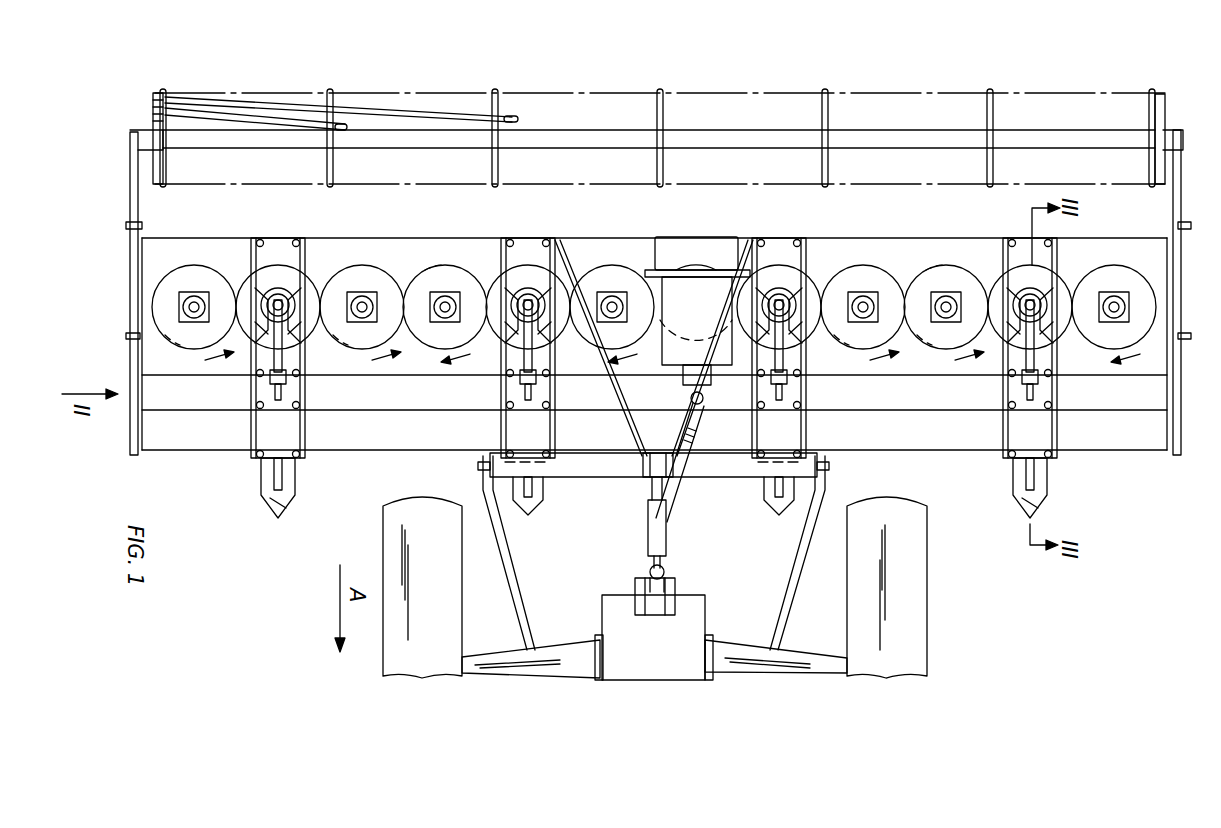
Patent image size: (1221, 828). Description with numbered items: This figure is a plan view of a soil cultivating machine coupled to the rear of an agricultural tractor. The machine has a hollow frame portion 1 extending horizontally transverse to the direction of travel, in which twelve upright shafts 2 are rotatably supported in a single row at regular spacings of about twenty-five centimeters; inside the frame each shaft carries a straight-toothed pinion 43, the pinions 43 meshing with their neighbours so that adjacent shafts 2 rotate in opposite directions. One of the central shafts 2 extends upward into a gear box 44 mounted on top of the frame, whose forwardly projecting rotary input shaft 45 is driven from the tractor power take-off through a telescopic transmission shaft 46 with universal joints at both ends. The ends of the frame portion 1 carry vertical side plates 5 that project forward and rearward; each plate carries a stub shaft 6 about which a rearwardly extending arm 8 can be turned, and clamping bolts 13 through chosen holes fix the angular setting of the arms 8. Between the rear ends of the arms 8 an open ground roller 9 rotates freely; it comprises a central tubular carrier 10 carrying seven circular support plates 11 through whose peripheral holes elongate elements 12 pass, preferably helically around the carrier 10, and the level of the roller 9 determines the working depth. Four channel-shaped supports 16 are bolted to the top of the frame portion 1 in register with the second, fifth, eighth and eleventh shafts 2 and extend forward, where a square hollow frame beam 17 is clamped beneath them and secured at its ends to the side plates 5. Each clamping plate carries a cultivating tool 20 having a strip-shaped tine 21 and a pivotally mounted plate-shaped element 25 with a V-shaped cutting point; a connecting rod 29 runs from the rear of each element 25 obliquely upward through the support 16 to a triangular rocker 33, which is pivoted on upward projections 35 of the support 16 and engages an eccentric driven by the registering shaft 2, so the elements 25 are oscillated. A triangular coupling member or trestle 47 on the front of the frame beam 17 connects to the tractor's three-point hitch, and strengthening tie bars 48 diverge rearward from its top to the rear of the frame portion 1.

The hollow frame portion 1 is at (1158, 232).
The shafts 2 is at (280, 258).
The side plates 5 is at (130, 430).
The stub shafts 6 is at (126, 336).
The arms 8 is at (130, 176).
The ground roller 9 is at (905, 92).
The tubular carrier 10 is at (872, 142).
The support plates 11 is at (165, 95).
The elongate elements 12 is at (285, 118).
The clamping bolts 13 is at (126, 226).
The supports 16 is at (305, 265).
The frame beam 17 is at (920, 428).
The cultivating tool 20 is at (300, 500).
The strip-shaped tine 21 is at (815, 490).
The plate-shaped element 25 is at (272, 512).
The connecting rod 29 is at (288, 440).
The rocker 33 is at (652, 353).
The upward projections 35 is at (300, 332).
The pinions 43 is at (424, 272).
The gear box 44 is at (662, 362).
The rotary input shaft 45 is at (705, 425).
The telescopic transmission shaft 46 is at (678, 494).
The coupling member or trestle 47 is at (605, 470).
The strengthening tie bars 48 is at (698, 352).